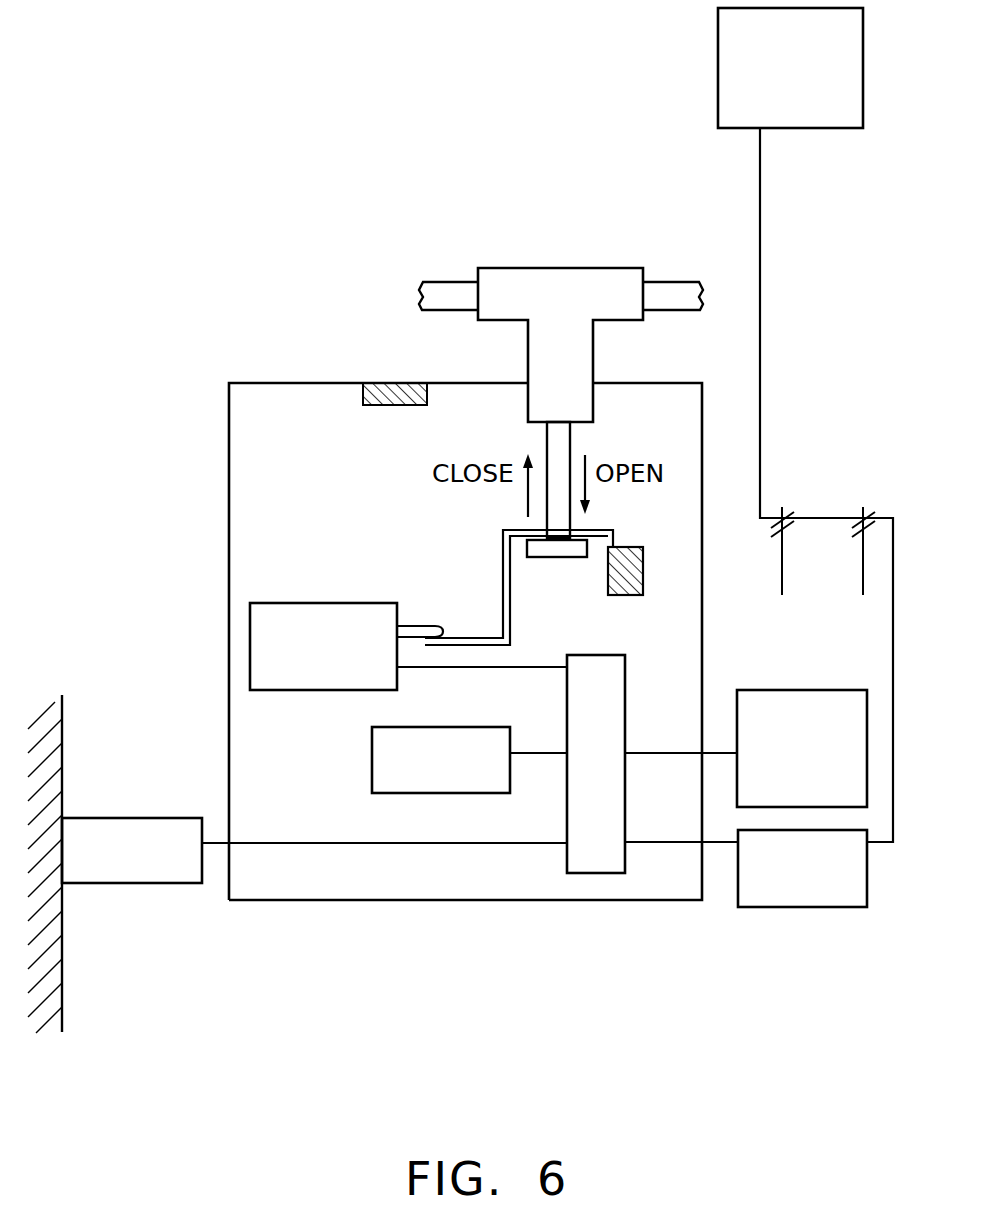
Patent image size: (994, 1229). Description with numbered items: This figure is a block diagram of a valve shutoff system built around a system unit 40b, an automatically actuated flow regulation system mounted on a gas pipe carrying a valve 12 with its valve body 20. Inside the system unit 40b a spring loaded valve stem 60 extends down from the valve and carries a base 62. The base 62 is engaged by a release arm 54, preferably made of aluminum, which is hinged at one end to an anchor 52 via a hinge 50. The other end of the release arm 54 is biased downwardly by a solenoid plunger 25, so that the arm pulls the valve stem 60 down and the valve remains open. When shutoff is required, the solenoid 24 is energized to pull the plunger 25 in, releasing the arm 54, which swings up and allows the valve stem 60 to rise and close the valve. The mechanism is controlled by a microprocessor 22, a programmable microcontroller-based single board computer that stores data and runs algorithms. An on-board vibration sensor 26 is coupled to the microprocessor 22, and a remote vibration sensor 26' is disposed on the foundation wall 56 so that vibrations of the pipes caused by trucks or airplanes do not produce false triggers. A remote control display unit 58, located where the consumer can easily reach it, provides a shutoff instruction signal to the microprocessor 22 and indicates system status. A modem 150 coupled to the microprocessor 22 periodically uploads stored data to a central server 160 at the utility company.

The valve 12 is at (445, 282).
The valve 20 is at (593, 268).
The system unit 40b is at (193, 435).
The spring loaded valve stem 60 is at (572, 435).
The hinge 50 is at (614, 540).
The base 62 is at (568, 558).
The anchor 52 is at (645, 572).
The release arm 54 is at (510, 638).
The solenoid 24 is at (313, 568).
The solenoid plunger 25 is at (420, 626).
The microprocessor 22 is at (625, 745).
The vibration sensor 26 is at (391, 759).
The remote vibration sensor 26' is at (134, 816).
The foundation wall 56 is at (62, 743).
The remote control display unit 58 is at (825, 690).
The modem 150 is at (825, 907).
The central server 160 is at (807, 128).